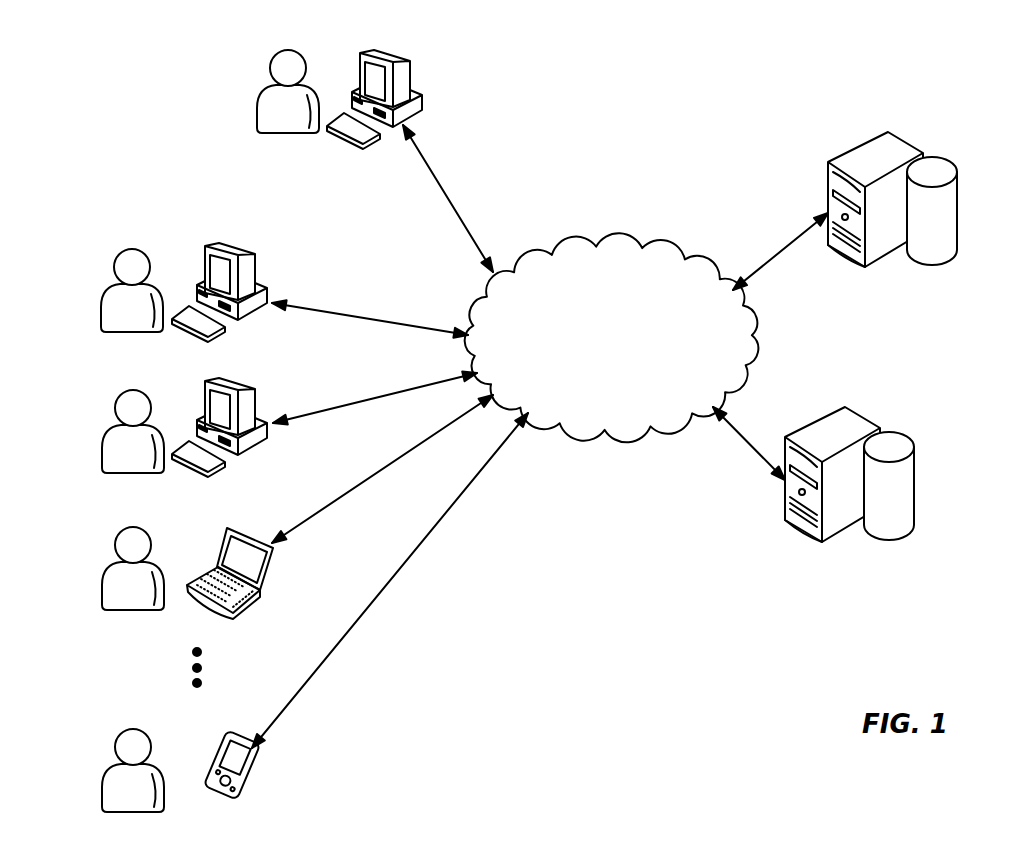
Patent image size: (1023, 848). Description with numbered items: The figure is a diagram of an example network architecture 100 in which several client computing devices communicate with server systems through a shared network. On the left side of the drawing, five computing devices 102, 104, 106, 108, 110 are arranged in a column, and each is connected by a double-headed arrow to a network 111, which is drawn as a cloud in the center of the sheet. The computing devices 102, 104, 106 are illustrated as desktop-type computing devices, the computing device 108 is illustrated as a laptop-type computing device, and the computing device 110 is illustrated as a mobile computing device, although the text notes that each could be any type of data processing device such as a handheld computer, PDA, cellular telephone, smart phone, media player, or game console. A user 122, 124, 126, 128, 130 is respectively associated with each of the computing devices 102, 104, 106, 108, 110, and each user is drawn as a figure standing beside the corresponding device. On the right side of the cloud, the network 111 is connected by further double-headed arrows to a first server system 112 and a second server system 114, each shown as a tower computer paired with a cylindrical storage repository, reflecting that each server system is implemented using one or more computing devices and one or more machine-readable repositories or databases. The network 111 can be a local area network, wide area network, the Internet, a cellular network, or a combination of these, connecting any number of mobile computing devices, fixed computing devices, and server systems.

The network architecture 100 is at (712, 112).
The computing device 102 is at (378, 52).
The computing device 104 is at (223, 247).
The computing device 106 is at (223, 383).
The computing device 108 is at (230, 530).
The computing device 110 is at (214, 733).
The network 111 is at (625, 240).
The first server system 112 is at (903, 217).
The second server system 114 is at (860, 486).
The user 122 is at (268, 82).
The user 124 is at (141, 252).
The user 126 is at (143, 393).
The user 128 is at (142, 528).
The user 130 is at (142, 730).